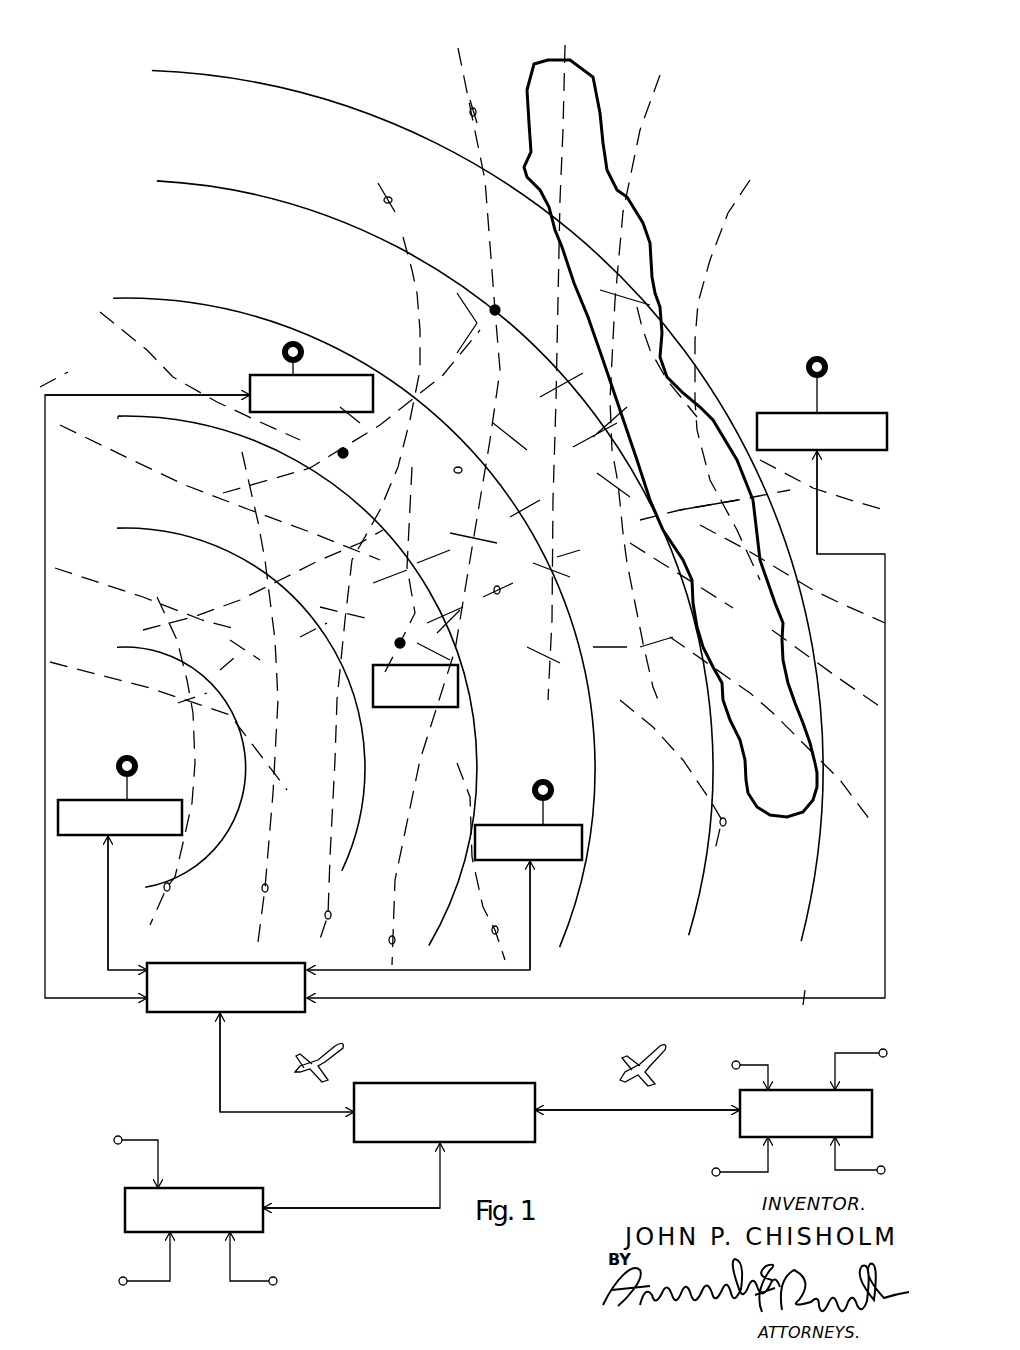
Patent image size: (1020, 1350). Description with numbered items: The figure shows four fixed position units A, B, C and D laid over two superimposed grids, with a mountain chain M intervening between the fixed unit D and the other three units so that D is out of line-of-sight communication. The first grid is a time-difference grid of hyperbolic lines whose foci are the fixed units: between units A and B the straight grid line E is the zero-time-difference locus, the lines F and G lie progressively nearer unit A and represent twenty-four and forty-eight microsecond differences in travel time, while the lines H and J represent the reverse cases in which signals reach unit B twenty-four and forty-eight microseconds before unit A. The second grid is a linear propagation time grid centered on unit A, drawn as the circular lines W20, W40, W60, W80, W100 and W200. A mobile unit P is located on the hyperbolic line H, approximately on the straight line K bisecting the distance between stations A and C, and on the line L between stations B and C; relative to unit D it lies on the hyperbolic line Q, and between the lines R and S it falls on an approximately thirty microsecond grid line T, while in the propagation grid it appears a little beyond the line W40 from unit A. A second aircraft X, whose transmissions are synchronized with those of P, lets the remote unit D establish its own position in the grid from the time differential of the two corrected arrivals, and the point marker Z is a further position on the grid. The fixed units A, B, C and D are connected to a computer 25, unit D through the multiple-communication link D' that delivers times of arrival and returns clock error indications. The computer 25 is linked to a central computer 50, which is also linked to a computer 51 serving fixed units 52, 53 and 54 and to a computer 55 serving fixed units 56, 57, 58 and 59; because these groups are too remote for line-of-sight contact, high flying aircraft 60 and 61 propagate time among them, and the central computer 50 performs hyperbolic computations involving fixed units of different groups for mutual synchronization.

The fixed position unit A is at (123, 759).
The fixed position unit B is at (567, 768).
The fixed position unit C is at (284, 350).
The fixed position unit D is at (822, 389).
The line D' is at (790, 987).
The mobile unit P is at (398, 643).
The mountain chain M is at (757, 810).
The aircraft X is at (498, 307).
The point Z is at (342, 450).
The hyperbolic line S is at (470, 113).
The hyperbolic line R is at (391, 200).
The hyperbolic grid line T is at (455, 470).
The hyperbolic line L is at (499, 591).
The hyperbolic line Q is at (722, 828).
The straight line K is at (117, 526).
The hyperbolic line G is at (169, 893).
The hyperbolic line F is at (263, 892).
The grid line E is at (325, 918).
The hyperbolic line H is at (389, 938).
The hyperbolic line J is at (492, 933).
The propagation time grid line W20 is at (222, 838).
The propagation time grid line W40 is at (340, 870).
The propagation time grid line W60 is at (452, 888).
The propagation time grid line W80 is at (574, 902).
The propagation time grid line W100 is at (690, 918).
The propagation time grid line W200 is at (802, 926).
The computer 25 is at (190, 968).
The central computer 50 is at (511, 1098).
The computer 51 is at (248, 1203).
The fixed unit 52 is at (115, 1138).
The fixed unit 53 is at (119, 1280).
The fixed unit 54 is at (278, 1280).
The computer 55 is at (738, 1105).
The fixed unit 56 is at (740, 1062).
The fixed unit 57 is at (883, 1049).
The fixed unit 58 is at (900, 1152).
The fixed unit 59 is at (714, 1168).
The high flying aircraft 60 is at (341, 1055).
The high flying aircraft 61 is at (652, 1052).